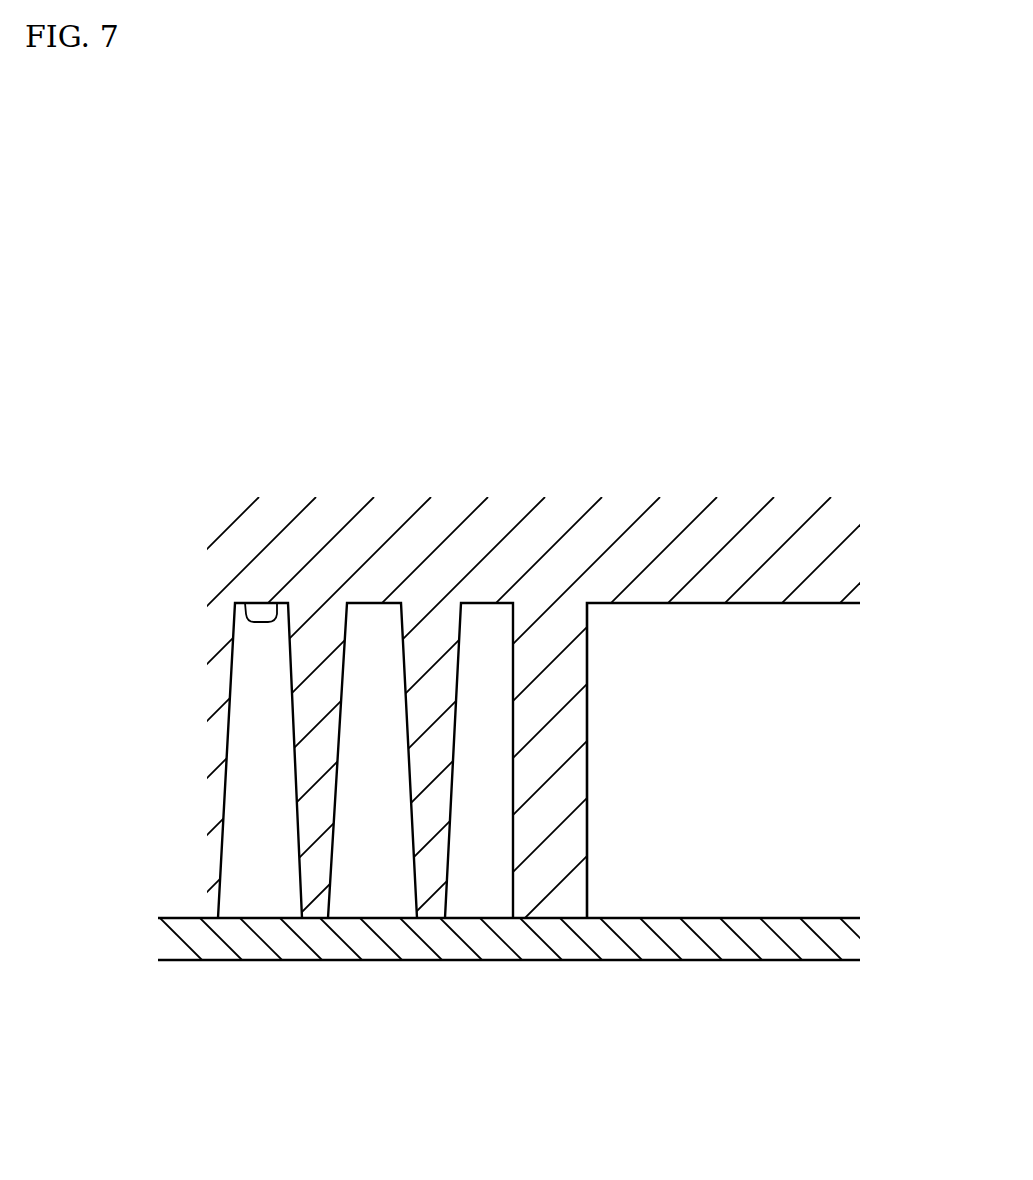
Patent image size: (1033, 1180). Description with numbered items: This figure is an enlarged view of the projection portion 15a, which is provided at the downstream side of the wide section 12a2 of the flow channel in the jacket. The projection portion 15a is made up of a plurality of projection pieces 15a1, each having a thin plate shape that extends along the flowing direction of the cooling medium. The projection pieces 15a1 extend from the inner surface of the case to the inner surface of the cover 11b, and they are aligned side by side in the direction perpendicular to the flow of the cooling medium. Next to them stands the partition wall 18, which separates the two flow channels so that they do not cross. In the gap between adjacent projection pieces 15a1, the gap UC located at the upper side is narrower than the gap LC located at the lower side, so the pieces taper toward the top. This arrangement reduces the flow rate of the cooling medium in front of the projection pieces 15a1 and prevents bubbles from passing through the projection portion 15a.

The wide section 12a2 is at (277, 603).
The upper gap UC is at (346, 631).
The projection portion 15a is at (482, 662).
The partition wall 18 is at (540, 759).
The projection piece 15a1 is at (432, 828).
The lower gap LC is at (331, 882).
The cover 11b is at (238, 940).